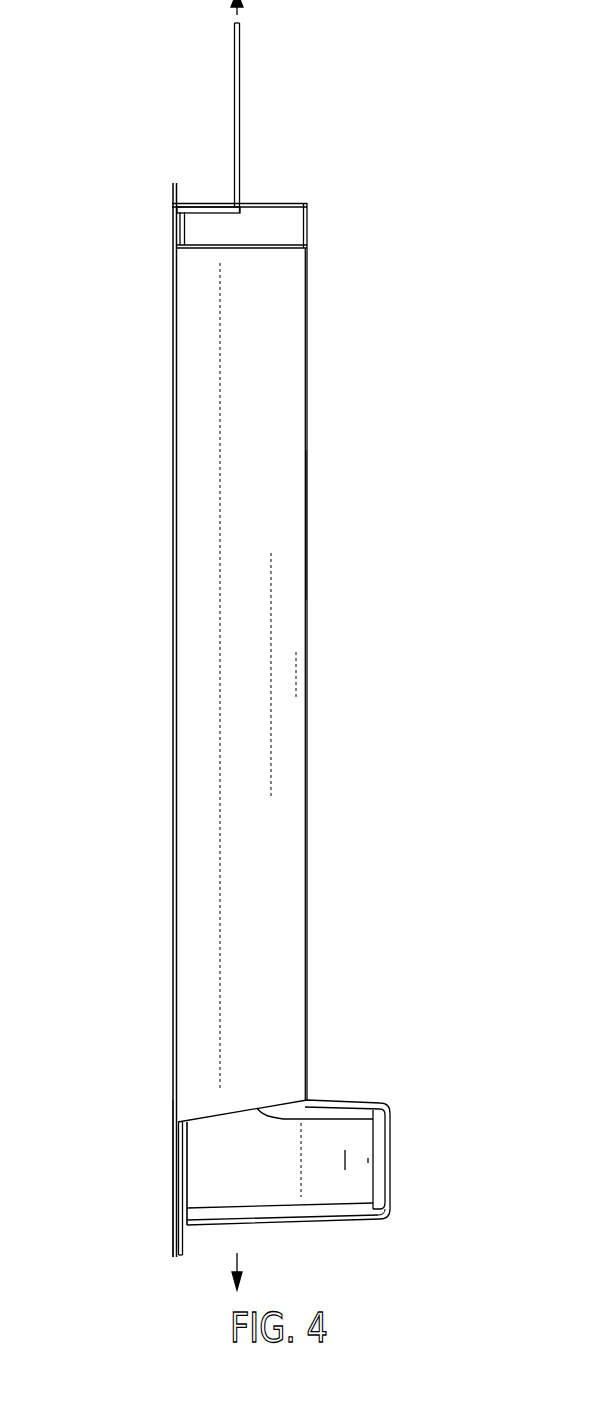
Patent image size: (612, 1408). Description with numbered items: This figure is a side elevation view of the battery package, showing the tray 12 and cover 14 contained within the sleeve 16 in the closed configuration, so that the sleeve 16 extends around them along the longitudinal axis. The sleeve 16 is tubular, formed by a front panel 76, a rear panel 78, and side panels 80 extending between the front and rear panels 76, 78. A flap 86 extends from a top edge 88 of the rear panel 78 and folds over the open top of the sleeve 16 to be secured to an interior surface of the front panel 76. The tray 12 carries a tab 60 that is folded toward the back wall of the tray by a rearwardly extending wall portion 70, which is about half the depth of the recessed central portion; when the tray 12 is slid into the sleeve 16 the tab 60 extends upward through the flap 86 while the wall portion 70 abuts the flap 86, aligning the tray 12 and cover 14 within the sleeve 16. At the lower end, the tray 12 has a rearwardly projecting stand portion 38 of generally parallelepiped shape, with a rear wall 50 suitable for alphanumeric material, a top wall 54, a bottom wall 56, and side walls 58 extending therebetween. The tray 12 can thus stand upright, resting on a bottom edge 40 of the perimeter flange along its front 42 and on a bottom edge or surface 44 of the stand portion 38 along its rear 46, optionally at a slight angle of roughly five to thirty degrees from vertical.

The tray 12 is at (182, 228).
The cover 14 is at (177, 1173).
The sleeve 16 is at (293, 615).
The stand portion 38 is at (365, 1188).
The bottom edge 40 is at (180, 1257).
The front 42 is at (120, 1103).
The bottom edge or surface 44 is at (377, 1222).
The rear 46 is at (375, 1020).
The rear wall 50 is at (380, 1163).
The top wall 54 is at (338, 1101).
The bottom wall 56 is at (307, 1225).
The side walls 58 is at (370, 1132).
The tab 60 is at (240, 80).
The rearwardly extending wall portion 70 is at (222, 204).
The front panel 76 is at (172, 594).
The rear panel 78 is at (307, 521).
The side panels 80 is at (296, 392).
The flap 86 is at (280, 200).
The top edge 88 is at (307, 203).